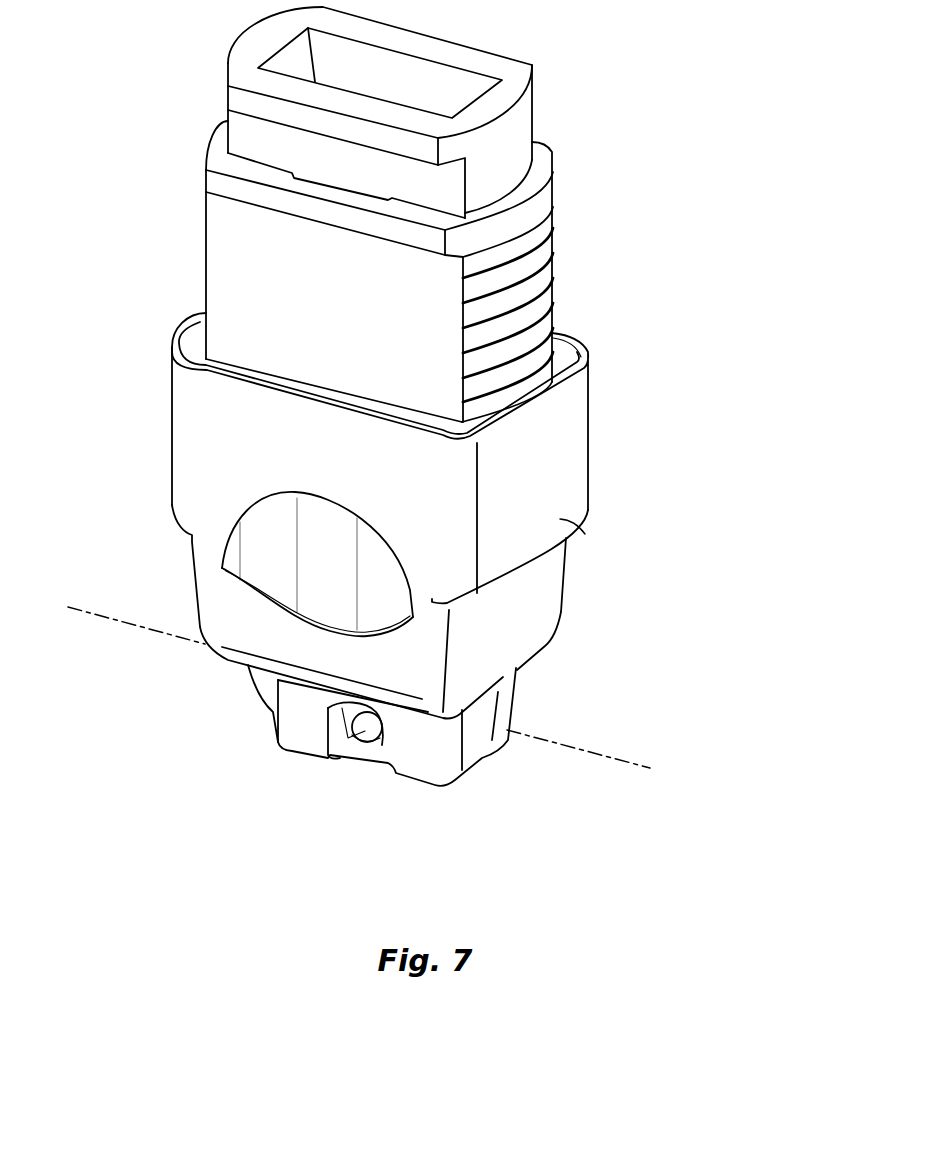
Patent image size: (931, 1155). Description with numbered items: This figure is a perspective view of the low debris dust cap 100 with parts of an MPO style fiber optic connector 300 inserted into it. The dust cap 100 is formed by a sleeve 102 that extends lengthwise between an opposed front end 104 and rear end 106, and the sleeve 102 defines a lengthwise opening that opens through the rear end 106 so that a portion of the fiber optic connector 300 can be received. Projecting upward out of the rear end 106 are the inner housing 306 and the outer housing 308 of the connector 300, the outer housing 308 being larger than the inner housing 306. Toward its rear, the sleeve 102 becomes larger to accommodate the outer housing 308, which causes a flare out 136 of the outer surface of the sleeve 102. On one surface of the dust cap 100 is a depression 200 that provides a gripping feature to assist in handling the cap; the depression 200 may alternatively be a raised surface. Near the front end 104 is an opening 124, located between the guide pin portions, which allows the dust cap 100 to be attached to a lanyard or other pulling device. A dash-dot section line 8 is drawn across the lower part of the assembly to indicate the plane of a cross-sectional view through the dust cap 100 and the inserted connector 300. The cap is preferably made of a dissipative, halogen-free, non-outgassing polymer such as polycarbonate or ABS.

The low debris dust cap 100 is at (442, 600).
The sleeve 102 is at (415, 605).
The front end 104 is at (382, 776).
The rear end 106 is at (611, 378).
The opening 124 is at (358, 748).
The flare out 136 is at (573, 532).
The depression 200 is at (308, 576).
The fiber optic connector 300 is at (446, 214).
The inner housing 306 is at (527, 73).
The outer housing 308 is at (557, 292).
The section line 8- 8 is at (125, 563).